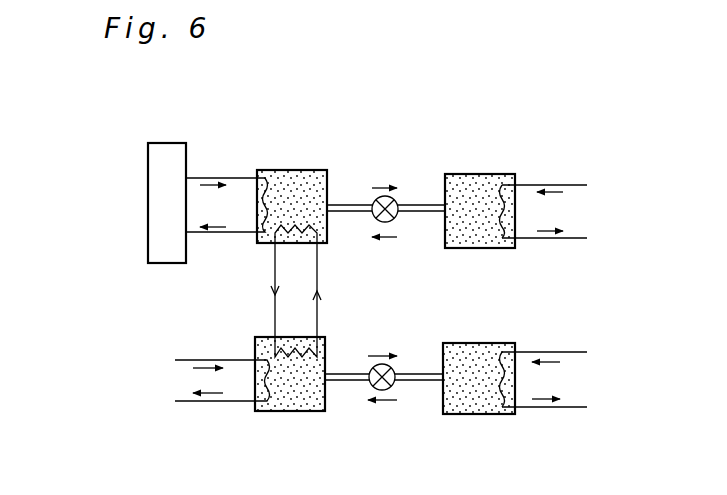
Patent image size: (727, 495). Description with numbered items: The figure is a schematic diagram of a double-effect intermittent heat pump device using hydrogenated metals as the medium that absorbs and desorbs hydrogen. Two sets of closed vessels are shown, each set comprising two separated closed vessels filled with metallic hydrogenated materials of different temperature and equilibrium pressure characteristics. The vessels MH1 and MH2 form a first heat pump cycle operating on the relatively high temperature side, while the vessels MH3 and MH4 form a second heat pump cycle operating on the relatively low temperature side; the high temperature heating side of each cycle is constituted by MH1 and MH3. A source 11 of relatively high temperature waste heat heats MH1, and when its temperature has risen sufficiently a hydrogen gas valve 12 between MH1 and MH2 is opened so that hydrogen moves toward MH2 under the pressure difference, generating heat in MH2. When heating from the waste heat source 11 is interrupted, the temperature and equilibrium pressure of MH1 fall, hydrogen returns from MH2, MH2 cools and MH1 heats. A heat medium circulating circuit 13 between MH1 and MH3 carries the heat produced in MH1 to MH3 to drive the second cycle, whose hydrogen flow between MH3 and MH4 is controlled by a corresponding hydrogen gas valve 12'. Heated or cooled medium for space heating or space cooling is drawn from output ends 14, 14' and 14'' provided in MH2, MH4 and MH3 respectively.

The waste heat source 11 is at (158, 218).
The hydrogenated metal MH1 is at (292, 169).
The hydrogenated metal MH2 is at (482, 173).
The hydrogenated metal MH3 is at (292, 407).
The hydrogenated metal MH4 is at (475, 410).
The hydrogen gas valve 12 is at (367, 234).
The hydrogen gas valve 12' is at (366, 406).
The heat medium circulating circuit 13 is at (274, 265).
The output end 14 is at (555, 211).
The output end 14' is at (554, 379).
The output end 14'' is at (202, 380).